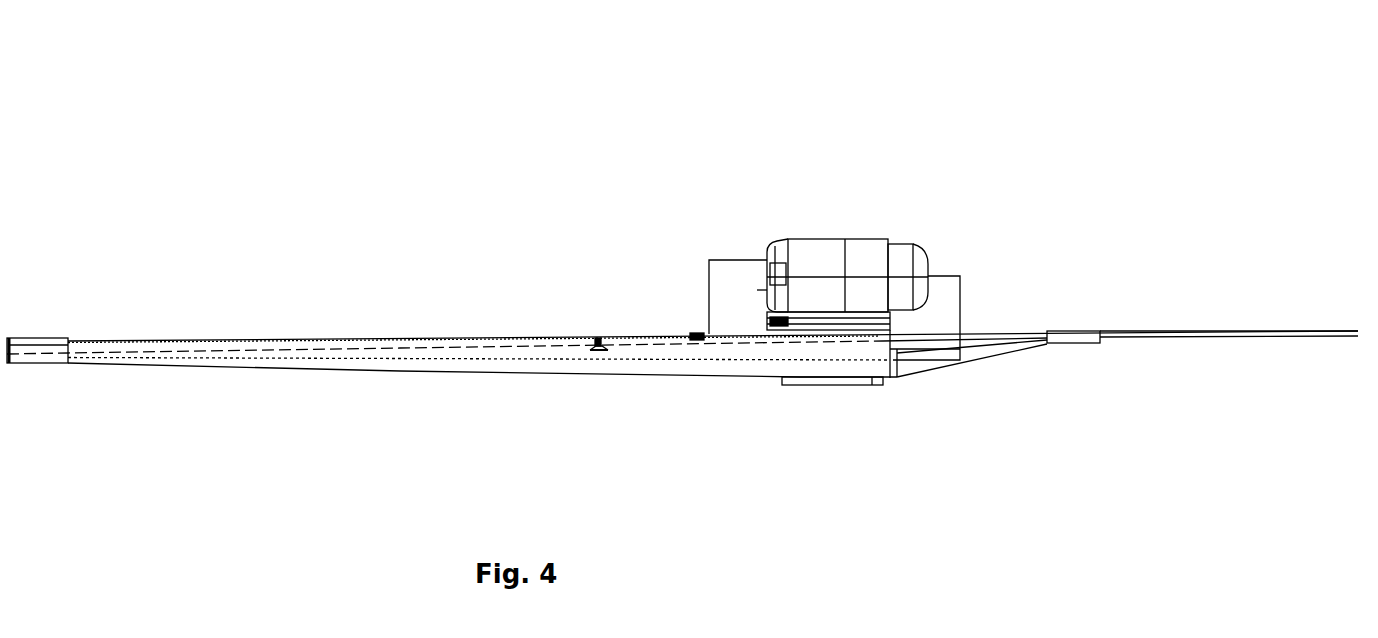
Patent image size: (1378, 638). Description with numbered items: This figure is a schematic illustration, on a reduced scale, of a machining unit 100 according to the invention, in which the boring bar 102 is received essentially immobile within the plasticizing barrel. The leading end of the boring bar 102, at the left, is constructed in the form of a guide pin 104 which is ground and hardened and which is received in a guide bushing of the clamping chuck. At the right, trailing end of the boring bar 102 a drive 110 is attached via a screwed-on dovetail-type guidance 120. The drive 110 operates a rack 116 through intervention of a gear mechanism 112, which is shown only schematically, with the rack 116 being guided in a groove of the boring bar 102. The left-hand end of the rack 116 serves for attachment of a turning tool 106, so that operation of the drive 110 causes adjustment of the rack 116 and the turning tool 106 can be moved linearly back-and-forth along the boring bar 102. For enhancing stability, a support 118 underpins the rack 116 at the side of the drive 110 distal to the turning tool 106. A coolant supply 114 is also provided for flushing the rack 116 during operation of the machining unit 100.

The machining unit 100 is at (426, 300).
The boring bar 102 is at (762, 357).
The guide pin 104 is at (40, 358).
The turning tool 106 is at (597, 336).
The drive 110 is at (830, 252).
The gear mechanism 112 is at (738, 318).
The coolant supply 114 is at (892, 313).
The rack 116 is at (1248, 332).
The support 118 is at (1113, 422).
The dovetail-type guidance 120 is at (855, 322).